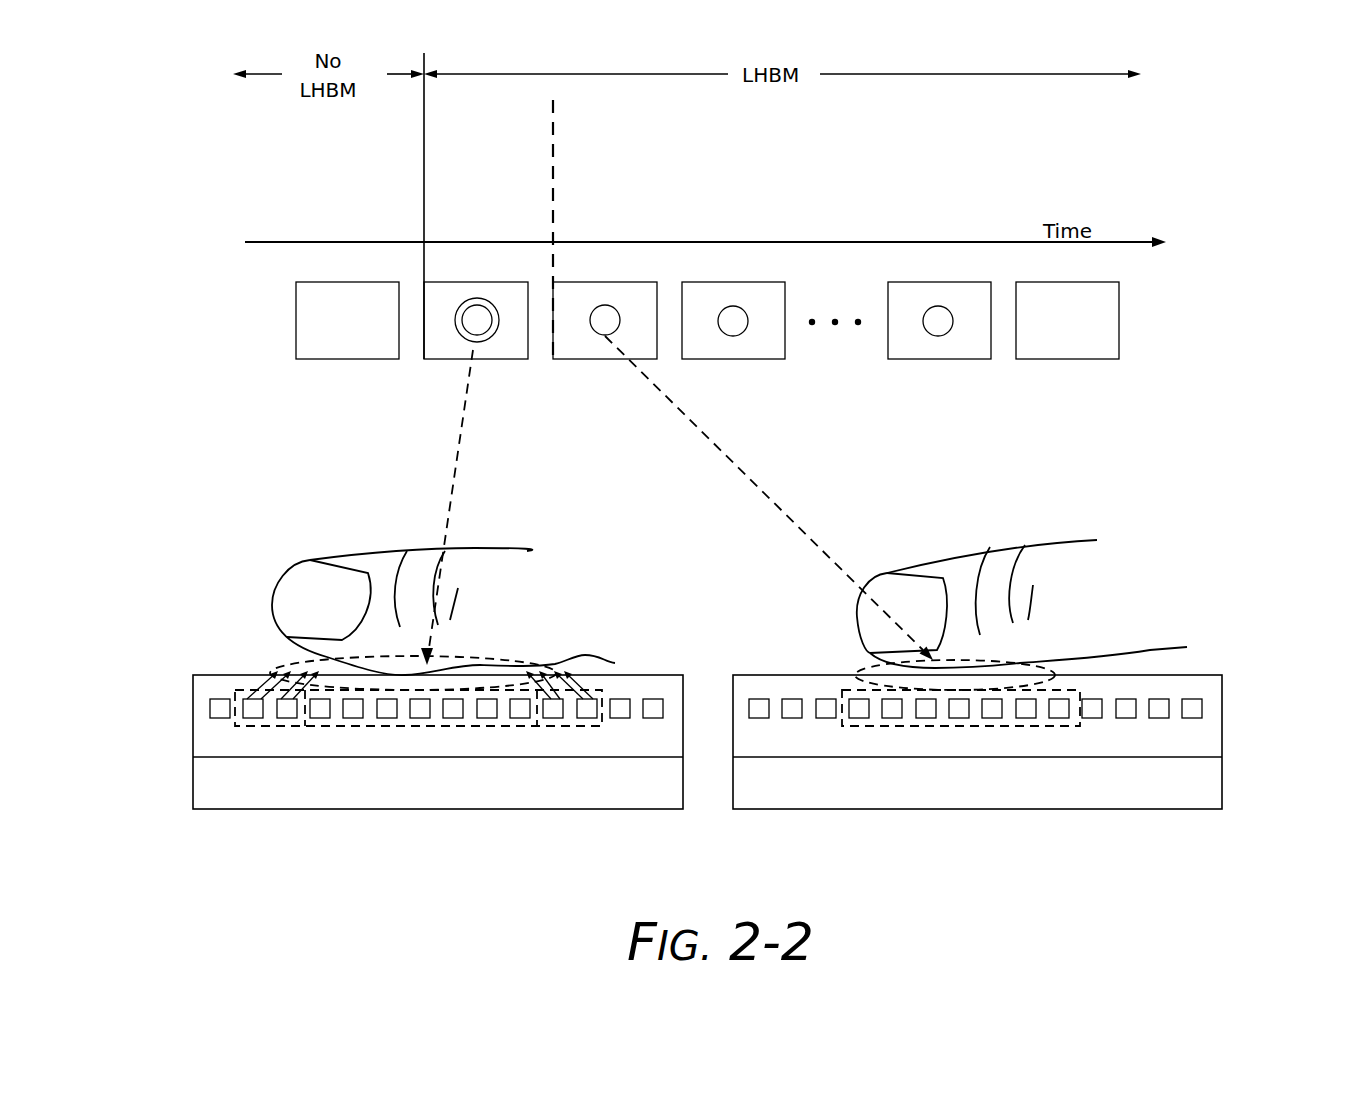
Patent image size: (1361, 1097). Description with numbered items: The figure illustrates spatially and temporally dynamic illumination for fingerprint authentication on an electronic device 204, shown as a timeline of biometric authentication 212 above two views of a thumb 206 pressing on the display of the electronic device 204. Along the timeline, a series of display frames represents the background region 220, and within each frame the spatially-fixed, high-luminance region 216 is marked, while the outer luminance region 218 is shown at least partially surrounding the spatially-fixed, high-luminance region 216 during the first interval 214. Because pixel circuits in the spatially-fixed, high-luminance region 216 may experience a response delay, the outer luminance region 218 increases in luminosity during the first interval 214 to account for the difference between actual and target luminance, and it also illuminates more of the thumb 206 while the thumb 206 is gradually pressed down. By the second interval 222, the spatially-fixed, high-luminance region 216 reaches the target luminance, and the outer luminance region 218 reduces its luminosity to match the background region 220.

The electronic device 204 is at (154, 743).
The thumb 206 is at (497, 558).
The biometric authentication 212 is at (1272, 75).
The first interval 214 is at (472, 177).
The spatially-fixed, high-luminance region 216 is at (477, 320).
The outer luminance region 218 is at (483, 337).
The background region 220 is at (316, 345).
The second interval 222 is at (823, 177).